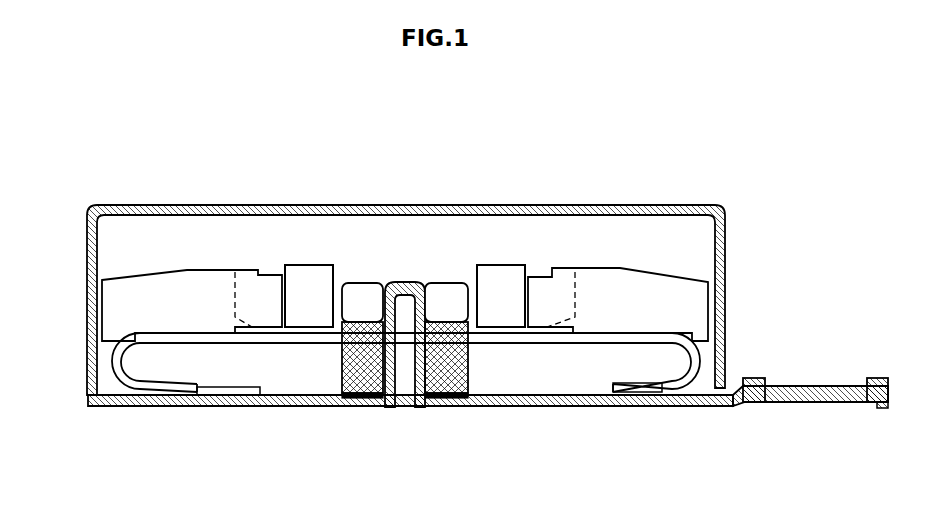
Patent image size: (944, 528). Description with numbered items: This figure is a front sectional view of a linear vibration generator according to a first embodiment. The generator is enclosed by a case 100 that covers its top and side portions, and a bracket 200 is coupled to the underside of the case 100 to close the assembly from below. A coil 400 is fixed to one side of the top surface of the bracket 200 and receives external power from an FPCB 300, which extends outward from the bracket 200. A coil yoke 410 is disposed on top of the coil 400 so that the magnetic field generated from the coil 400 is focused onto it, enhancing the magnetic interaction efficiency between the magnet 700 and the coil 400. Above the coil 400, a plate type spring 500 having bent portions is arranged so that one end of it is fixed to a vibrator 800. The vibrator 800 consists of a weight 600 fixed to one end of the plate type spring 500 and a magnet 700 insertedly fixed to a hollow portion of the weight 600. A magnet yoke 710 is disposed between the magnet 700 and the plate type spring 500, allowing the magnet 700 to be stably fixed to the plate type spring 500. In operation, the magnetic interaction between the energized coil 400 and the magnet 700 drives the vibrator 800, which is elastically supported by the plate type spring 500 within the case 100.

The case 100 is at (355, 208).
The bracket 200 is at (113, 407).
The FPCB 300 is at (693, 402).
The coil 400 is at (368, 373).
The coil yoke 410 is at (448, 295).
The plate type spring 500 is at (635, 390).
The weight 600 is at (605, 292).
The magnet 700 is at (310, 278).
The magnet yoke 710 is at (283, 268).
The vibrator 800 is at (360, 236).